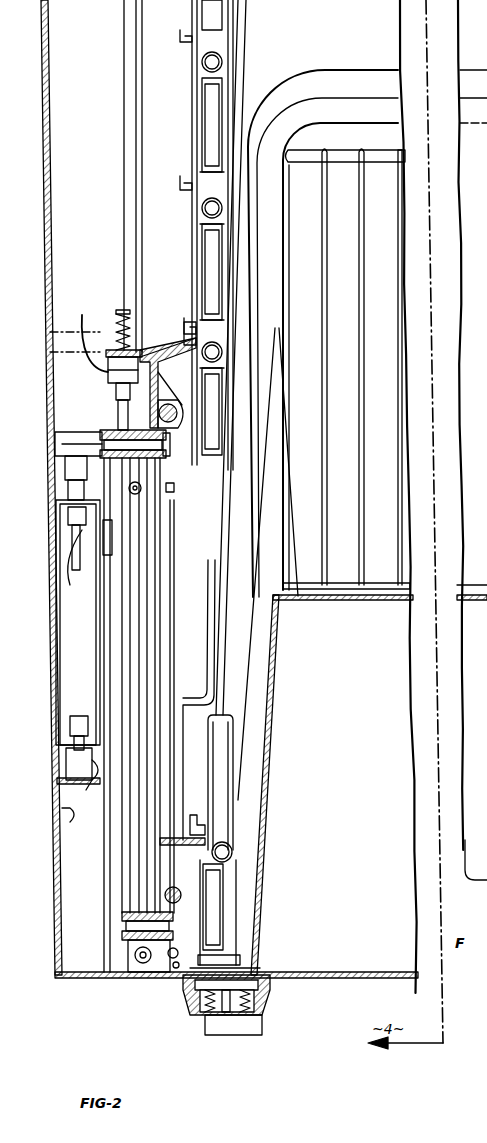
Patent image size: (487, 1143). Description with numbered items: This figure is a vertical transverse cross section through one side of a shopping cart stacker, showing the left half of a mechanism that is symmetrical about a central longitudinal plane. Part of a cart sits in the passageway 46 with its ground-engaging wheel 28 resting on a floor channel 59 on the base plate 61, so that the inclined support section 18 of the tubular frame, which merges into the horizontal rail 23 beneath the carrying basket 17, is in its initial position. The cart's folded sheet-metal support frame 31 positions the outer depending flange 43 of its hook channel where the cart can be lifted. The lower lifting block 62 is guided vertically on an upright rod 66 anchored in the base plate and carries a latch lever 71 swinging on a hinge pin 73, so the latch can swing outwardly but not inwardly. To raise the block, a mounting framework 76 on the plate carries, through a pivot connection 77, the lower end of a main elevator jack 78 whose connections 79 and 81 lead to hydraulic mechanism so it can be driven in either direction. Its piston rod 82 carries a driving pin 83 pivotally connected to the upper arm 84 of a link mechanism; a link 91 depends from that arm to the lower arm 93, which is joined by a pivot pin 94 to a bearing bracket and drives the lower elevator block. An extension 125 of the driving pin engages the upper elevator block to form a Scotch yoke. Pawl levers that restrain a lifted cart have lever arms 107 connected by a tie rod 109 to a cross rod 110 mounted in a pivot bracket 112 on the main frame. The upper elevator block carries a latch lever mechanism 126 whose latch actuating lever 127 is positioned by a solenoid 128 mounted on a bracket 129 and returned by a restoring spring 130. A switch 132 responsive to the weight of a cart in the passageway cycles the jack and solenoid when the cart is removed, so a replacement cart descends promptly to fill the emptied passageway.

The carrying basket 17 is at (412, 528).
The inclined support section 18 is at (244, 680).
The horizontal rail 23 is at (222, 354).
The ground-engaging wheel 28 is at (200, 316).
The support frame 31 is at (226, 36).
The outer depending flange 43 is at (181, 184).
The passageway 46 is at (220, 622).
The floor channel 59 is at (250, 968).
The base plate 61 is at (116, 978).
The lower lifting block 62 is at (133, 900).
The upright rod 66 is at (125, 140).
The latch lever 71 is at (205, 840).
The hinge pin 73 is at (180, 896).
The mounting framework 76 is at (64, 812).
The pivot connection 77 is at (80, 791).
The main elevator jack 78 is at (76, 636).
The connection 79 is at (84, 720).
The connection 81 is at (76, 550).
The piston rod 82 is at (80, 470).
The driving pin 83 is at (104, 430).
The upper arm 84 is at (110, 528).
The link 91 is at (122, 628).
The lower arm 93 is at (112, 716).
The pivot pin 94 is at (100, 666).
The lever arm 107 is at (176, 484).
The tie rod 109 is at (170, 582).
The cross rod 110 is at (170, 960).
The pivot bracket 112 is at (176, 970).
The extension 125 is at (164, 457).
The latch lever mechanism 126 is at (178, 412).
The latch actuating lever 127 is at (150, 405).
The solenoid 128 is at (87, 332).
The bracket 129 is at (140, 350).
The restoring spring 130 is at (116, 316).
The switch 132 is at (240, 1026).